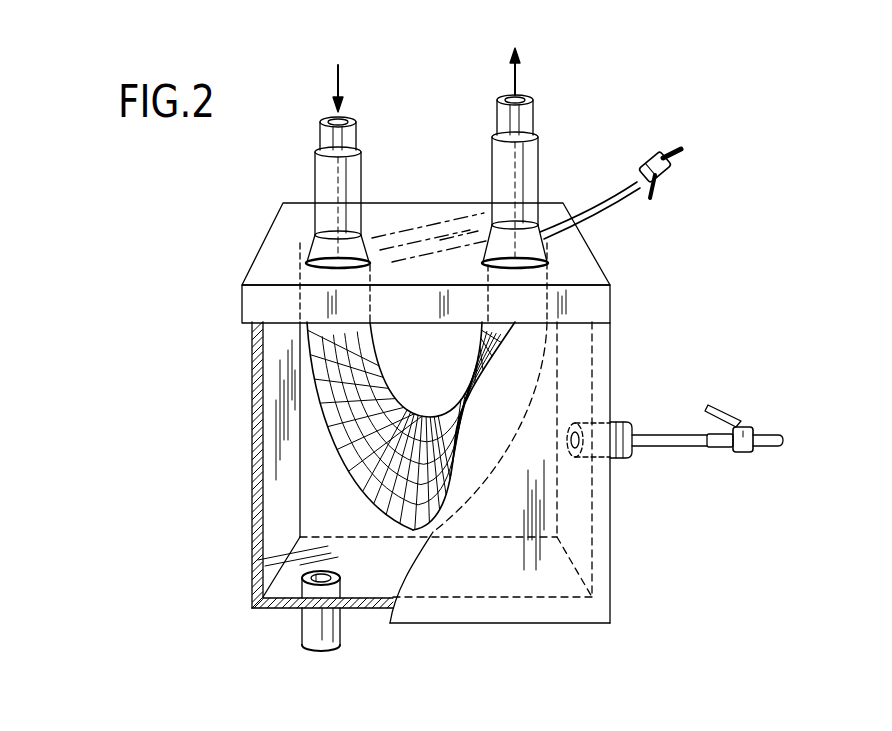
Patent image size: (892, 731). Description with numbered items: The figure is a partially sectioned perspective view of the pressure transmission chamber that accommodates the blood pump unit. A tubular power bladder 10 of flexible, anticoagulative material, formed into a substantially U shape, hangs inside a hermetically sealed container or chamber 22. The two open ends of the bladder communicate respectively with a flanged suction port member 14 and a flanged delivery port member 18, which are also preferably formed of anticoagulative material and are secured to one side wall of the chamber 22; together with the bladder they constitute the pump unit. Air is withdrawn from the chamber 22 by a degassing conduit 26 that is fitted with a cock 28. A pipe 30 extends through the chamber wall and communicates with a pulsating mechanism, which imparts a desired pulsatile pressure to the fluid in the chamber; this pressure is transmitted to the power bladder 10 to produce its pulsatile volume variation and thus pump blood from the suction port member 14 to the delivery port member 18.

The tubular power bladder 10 is at (355, 428).
The flanged suction port member 14 is at (333, 201).
The flanged delivery port member 18 is at (517, 175).
The hermetically sealed chamber 22 is at (252, 407).
The degassing conduit 26 is at (655, 439).
The cock 28 is at (757, 428).
The pipe 30 is at (327, 623).